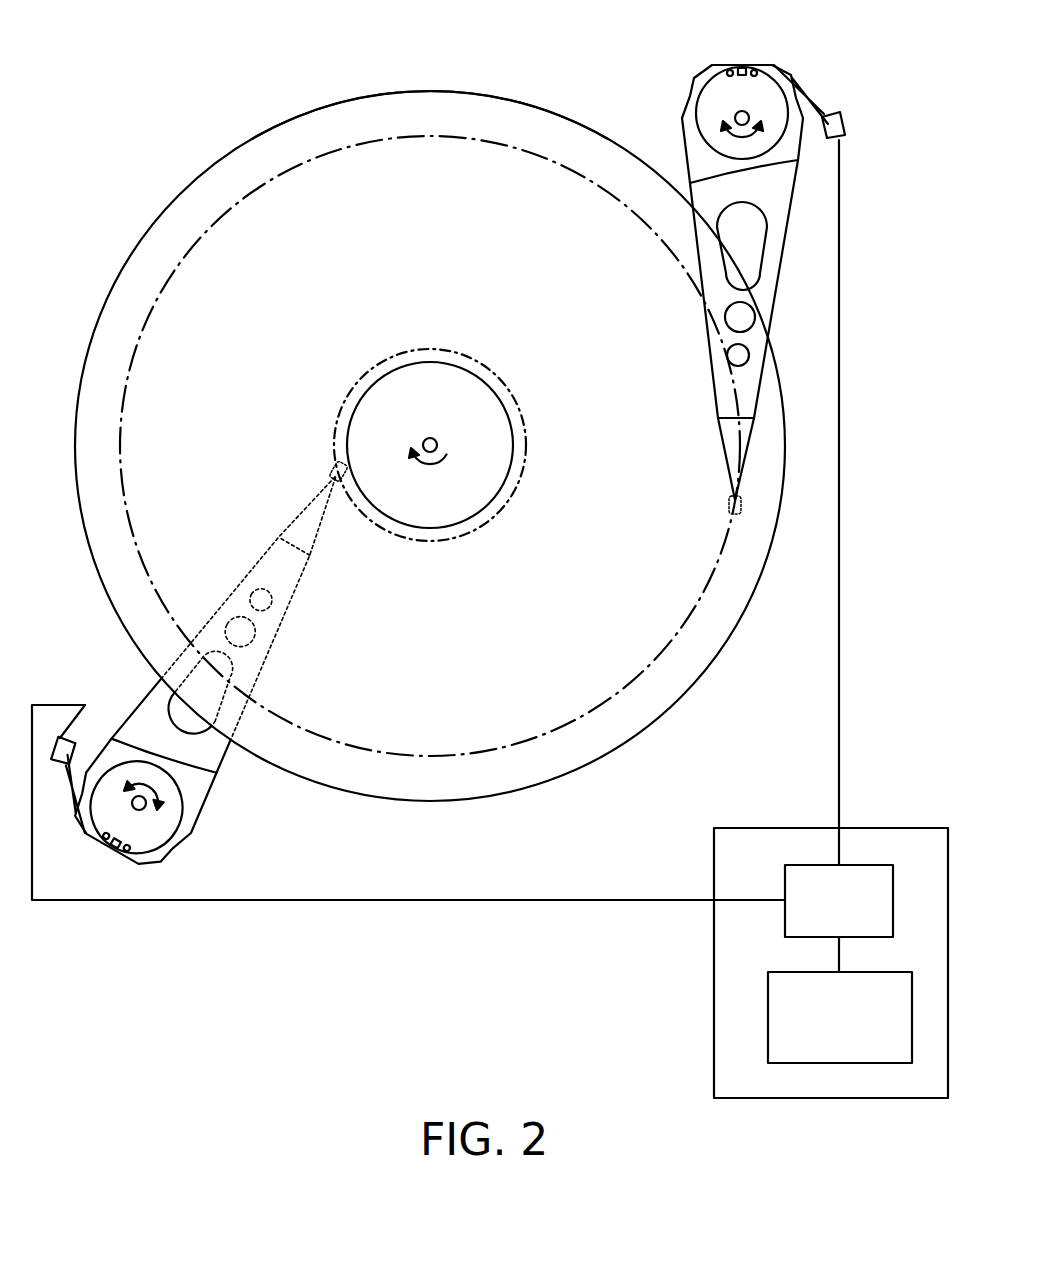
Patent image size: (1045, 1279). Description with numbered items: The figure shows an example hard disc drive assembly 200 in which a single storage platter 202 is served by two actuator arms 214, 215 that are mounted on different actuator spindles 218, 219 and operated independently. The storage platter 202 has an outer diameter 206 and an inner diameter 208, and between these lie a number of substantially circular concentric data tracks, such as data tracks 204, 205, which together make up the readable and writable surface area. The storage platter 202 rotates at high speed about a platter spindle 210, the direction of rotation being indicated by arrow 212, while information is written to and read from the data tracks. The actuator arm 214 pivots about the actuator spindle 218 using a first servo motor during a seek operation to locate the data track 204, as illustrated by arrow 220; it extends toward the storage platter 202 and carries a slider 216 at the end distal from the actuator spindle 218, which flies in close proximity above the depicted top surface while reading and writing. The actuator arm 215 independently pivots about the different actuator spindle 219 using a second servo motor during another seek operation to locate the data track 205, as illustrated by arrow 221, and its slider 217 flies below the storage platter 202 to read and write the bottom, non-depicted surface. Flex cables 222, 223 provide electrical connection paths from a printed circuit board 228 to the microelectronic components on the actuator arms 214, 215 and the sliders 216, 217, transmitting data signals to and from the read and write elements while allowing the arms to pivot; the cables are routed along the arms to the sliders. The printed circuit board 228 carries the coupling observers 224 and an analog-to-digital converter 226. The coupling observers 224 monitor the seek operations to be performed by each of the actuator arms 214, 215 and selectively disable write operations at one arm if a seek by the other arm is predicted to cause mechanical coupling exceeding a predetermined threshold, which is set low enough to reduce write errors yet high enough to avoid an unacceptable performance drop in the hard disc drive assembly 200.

The hard disc drive assembly 200 is at (178, 72).
The storage platter 202 is at (455, 684).
The data track 204 is at (640, 660).
The data track 205 is at (337, 428).
The outer diameter 206 is at (360, 92).
The inner diameter 208 is at (423, 362).
The platter spindle 210 is at (426, 441).
The arrow 212 is at (434, 448).
The actuator arm 214 is at (788, 201).
The actuator arm 215 is at (171, 745).
The slider 216 is at (733, 502).
The slider 217 is at (328, 470).
The actuator spindle 218 is at (736, 112).
The actuator spindle 219 is at (142, 807).
The arrow 220 is at (762, 118).
The arrow 221 is at (160, 806).
The flex cable 222 is at (840, 470).
The flex cable 223 is at (498, 900).
The coupling observers 224 is at (818, 1059).
The analog-to-digital converter 226 is at (818, 926).
The printed circuit board 228 is at (766, 894).